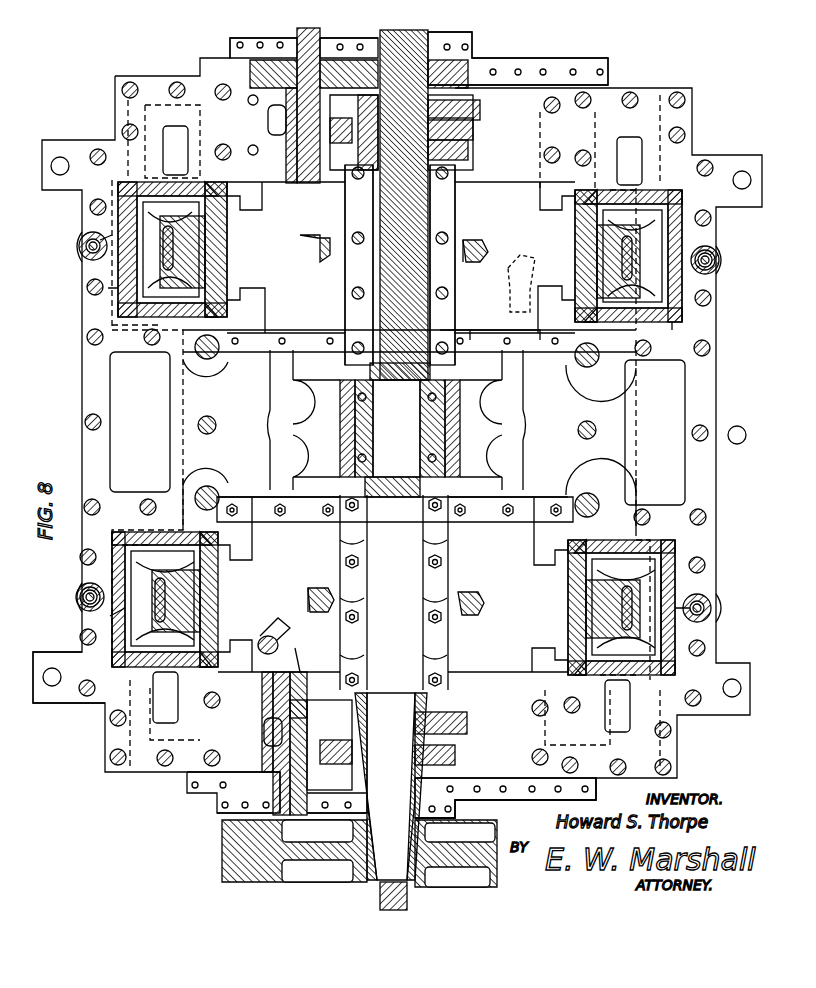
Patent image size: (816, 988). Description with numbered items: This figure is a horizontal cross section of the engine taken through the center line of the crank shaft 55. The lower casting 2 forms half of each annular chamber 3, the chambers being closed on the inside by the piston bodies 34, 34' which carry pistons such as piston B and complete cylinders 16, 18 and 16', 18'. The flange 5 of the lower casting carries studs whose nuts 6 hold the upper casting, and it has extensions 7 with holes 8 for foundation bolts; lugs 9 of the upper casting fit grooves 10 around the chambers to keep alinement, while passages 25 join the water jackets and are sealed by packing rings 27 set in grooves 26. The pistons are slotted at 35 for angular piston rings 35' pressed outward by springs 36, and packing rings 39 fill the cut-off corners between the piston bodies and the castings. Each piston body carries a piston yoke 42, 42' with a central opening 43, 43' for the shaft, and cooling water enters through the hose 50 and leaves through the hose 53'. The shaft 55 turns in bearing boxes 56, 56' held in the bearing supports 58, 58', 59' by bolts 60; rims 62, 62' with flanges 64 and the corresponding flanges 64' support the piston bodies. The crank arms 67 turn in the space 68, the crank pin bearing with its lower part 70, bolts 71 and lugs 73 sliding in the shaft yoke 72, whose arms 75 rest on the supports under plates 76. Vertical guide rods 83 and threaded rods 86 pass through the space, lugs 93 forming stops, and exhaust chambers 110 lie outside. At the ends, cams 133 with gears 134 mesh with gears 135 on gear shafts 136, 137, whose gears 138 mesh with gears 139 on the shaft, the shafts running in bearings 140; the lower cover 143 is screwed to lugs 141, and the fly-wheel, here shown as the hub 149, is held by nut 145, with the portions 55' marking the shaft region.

The lower casting 2 is at (381, 430).
The annular chamber 3 is at (104, 226).
The flange 5 is at (397, 425).
The nuts 6 is at (389, 432).
The extensions 7 is at (389, 556).
The holes 8 is at (397, 427).
The lugs 9 is at (361, 425).
The grooves 10 is at (376, 429).
The cylinder 16 is at (392, 603).
The cylinder 16' is at (172, 232).
The cylinder 18 is at (614, 616).
The cylinder 18' is at (628, 241).
The passages 25 is at (407, 416).
The grooves 26 is at (398, 431).
The metallic packing rings 27 is at (390, 430).
The piston body 34 is at (393, 603).
The piston body 34' is at (400, 252).
The slots 35 is at (395, 453).
The angular piston rings 35' is at (403, 438).
The springs 36 is at (396, 428).
The metallic packing rings 39 is at (392, 426).
The piston yoke 42 is at (396, 589).
The piston yoke 42' is at (394, 235).
The central circular opening 43 is at (325, 591).
The central circular opening 43' is at (462, 238).
The hose 50 is at (274, 633).
The hose 53' is at (522, 283).
The crank shaft 55 is at (391, 786).
The bolt strip 55' is at (355, 265).
The bearing box 56 is at (394, 592).
The bearing box 56' is at (442, 265).
The bearing support 58 is at (393, 584).
The bearing support 58' is at (401, 238).
The bearing support 59' is at (490, 323).
The bolts 60 is at (397, 428).
The rims 62 is at (393, 602).
The rims 62' is at (399, 248).
The flanges 64 is at (393, 584).
The shoulder 64' is at (398, 257).
The crank arms 67 is at (400, 430).
The space 68 is at (409, 430).
The lower part of sliding bearing 70 is at (397, 428).
The bolts 71 is at (394, 426).
The shaft yoke 72 is at (397, 428).
The lugs 73 is at (398, 427).
The arms 75 is at (397, 420).
The plates 76 is at (395, 509).
The vertical guide rods 83 is at (395, 426).
The vertical rods 86 is at (396, 414).
The lugs 93 is at (409, 428).
The exhaust chamber 110 is at (397, 429).
The cam 133 is at (450, 385).
The gear 134 is at (447, 432).
The gears 135 is at (352, 425).
The gear shaft 136 is at (296, 651).
The gear shaft 137 is at (296, 418).
The gears 138 is at (263, 413).
The gears 139 is at (389, 454).
The bearings 140 is at (277, 430).
The lugs 141 is at (391, 795).
The lower cover 143 is at (518, 58).
The nut 145 is at (377, 896).
The pulley hub 149 is at (359, 853).
The piston B is at (395, 418).